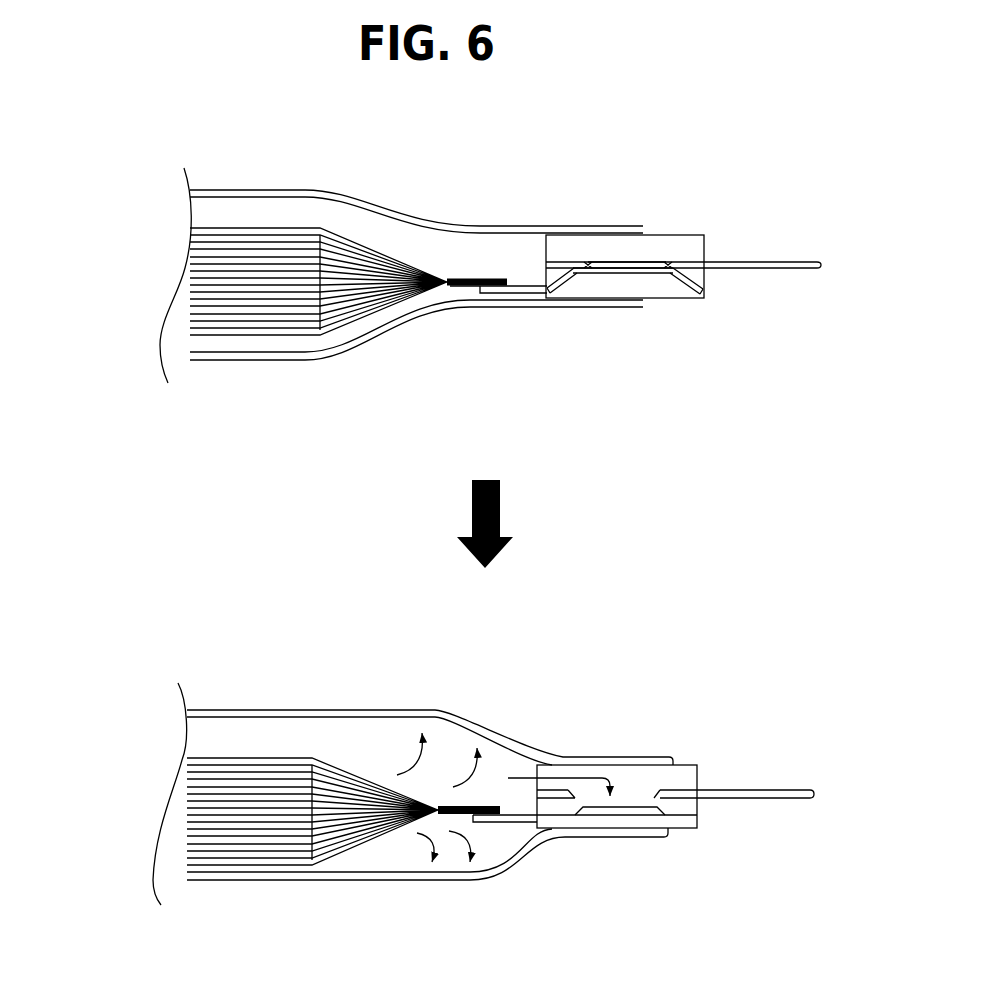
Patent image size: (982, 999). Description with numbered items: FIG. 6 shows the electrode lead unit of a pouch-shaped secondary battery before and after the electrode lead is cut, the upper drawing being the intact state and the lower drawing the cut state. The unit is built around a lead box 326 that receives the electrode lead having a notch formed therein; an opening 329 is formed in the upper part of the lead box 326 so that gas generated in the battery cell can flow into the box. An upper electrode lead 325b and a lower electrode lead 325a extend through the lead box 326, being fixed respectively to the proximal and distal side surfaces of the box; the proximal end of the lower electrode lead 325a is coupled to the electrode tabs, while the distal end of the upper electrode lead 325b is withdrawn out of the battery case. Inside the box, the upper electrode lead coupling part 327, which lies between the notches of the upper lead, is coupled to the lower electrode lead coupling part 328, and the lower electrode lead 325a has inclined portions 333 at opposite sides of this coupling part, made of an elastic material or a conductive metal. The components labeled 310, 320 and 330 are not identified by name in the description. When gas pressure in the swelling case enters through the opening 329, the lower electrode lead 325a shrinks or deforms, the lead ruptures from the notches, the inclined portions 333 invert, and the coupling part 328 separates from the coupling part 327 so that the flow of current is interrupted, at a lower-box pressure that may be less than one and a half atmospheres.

The outer tube 310 is at (368, 196).
The optical fibers 320 is at (130, 227).
The inner tube 330 is at (404, 332).
The lower electrode lead 325a is at (502, 296).
The upper electrode lead 325b is at (747, 258).
The lead box 326 is at (709, 281).
The upper electrode lead coupling part 327 is at (630, 256).
The lower electrode lead coupling part 328 is at (622, 277).
The opening 329 is at (540, 246).
The inclined portions 333 is at (563, 287).